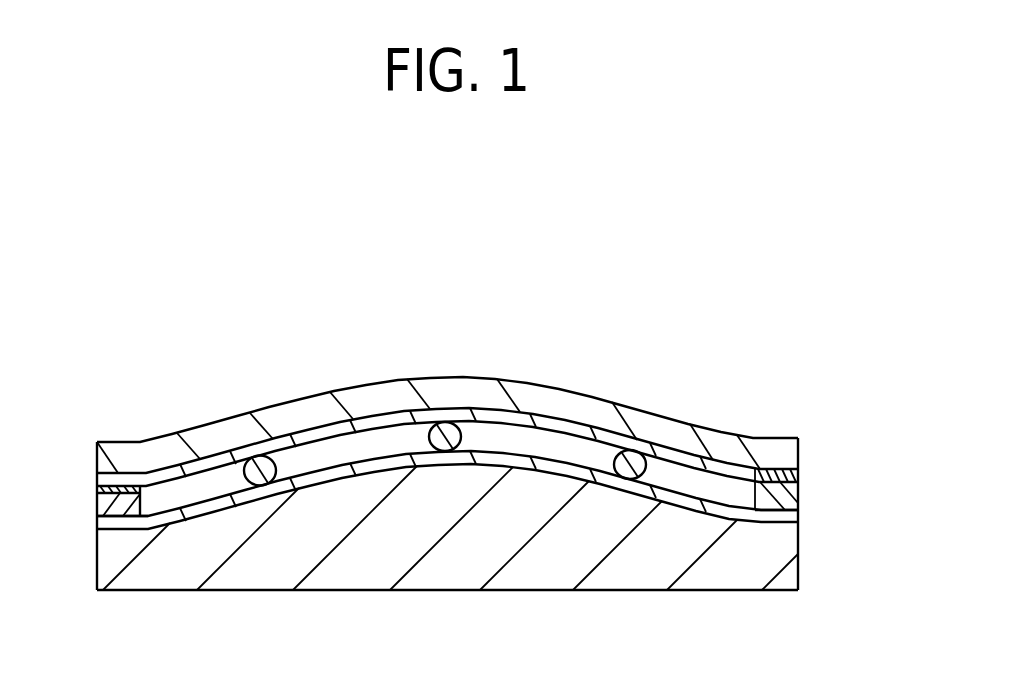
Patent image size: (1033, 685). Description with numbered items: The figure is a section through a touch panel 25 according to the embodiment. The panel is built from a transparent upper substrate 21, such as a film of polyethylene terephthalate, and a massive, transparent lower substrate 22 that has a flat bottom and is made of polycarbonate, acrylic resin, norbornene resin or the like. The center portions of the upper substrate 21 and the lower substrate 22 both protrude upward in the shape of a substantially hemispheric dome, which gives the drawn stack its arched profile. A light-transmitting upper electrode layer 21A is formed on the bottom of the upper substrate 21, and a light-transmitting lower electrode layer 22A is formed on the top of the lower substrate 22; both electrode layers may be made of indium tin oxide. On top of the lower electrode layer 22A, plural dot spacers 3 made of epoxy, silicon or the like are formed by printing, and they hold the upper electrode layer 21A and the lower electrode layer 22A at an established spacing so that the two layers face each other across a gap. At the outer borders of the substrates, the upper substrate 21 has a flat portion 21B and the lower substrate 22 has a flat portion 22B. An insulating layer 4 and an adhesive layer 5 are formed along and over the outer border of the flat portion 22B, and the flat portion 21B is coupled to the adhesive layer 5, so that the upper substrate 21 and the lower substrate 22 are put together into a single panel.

The touch panel 25 is at (382, 373).
The upper substrate 21 is at (600, 396).
The upper electrode layer 21A is at (799, 460).
The flat portion 21B is at (773, 437).
The lower substrate 22 is at (638, 588).
The lower electrode layer 22A is at (780, 508).
The flat portion 22B is at (777, 521).
The dot spacers 3 is at (253, 461).
The insulating layer 4 is at (97, 516).
The adhesive layer 5 is at (97, 488).